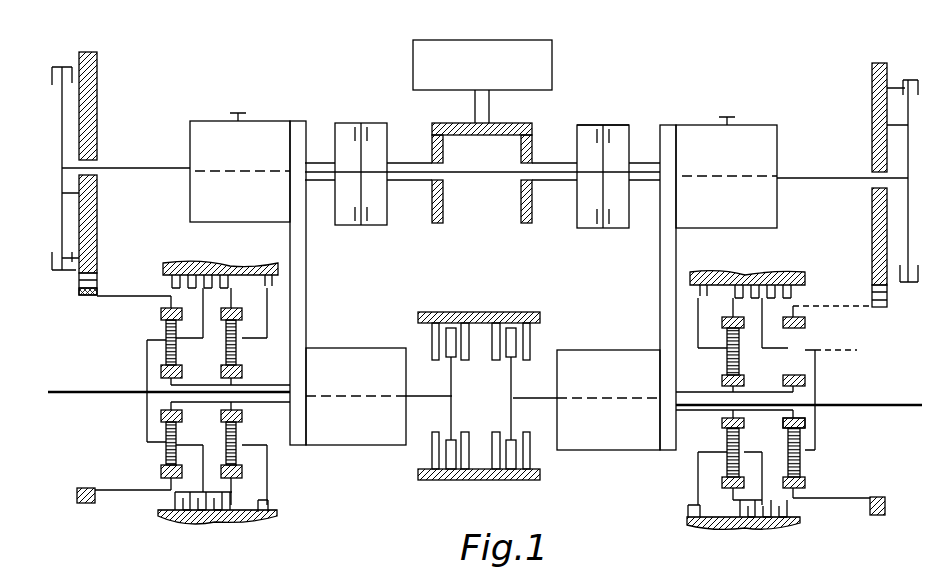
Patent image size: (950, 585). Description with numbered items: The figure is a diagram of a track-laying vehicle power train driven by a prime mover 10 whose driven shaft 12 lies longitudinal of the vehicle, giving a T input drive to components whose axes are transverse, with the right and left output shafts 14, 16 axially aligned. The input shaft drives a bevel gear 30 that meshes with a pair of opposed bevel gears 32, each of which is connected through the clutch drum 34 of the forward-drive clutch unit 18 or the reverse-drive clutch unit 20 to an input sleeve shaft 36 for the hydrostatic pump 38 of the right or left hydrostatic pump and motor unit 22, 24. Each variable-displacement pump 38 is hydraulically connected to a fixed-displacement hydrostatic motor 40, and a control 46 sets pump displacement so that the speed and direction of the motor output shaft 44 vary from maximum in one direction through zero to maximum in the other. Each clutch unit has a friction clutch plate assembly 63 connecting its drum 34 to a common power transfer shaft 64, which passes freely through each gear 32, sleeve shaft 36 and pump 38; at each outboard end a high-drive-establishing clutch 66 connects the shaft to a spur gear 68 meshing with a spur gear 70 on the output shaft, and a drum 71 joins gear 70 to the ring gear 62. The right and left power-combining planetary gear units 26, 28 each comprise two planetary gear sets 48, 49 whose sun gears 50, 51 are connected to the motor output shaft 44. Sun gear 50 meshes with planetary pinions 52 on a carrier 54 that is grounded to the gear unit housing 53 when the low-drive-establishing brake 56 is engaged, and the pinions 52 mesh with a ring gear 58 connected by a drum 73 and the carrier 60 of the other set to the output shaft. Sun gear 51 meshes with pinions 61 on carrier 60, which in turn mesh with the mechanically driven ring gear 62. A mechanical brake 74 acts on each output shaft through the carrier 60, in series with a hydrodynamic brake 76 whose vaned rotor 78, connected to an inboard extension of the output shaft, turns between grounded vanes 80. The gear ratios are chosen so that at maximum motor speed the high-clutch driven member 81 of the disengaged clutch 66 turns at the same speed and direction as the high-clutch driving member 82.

The prime mover 10 is at (553, 42).
The prime mover driven shaft 12 is at (475, 107).
The right-track-powering output shaft 14 is at (865, 404).
The left-track-powering output shaft 16 is at (90, 392).
The forward-drive clutch unit 18 is at (598, 122).
The reverse-drive clutch unit 20 is at (378, 228).
The right hydrostatic pump and motor unit 22 is at (760, 124).
The left hydrostatic pump and motor unit 24 is at (479, 151).
The right power-combining planetary gear unit 26 is at (768, 531).
The left power-combining planetary gear unit 28 is at (245, 523).
The bevel gear 30 is at (490, 179).
The opposed bevel gears 32 is at (437, 212).
The clutch drum 34 is at (483, 167).
The input sleeve shaft 36 is at (318, 182).
The hydrostatic pump 38 is at (195, 172).
The hydrostatic motor 40 is at (485, 405).
The motor output shaft 44 is at (292, 400).
The control 46 is at (240, 112).
The planetary gear set 48 is at (242, 350).
The planetary gear set 49 is at (160, 354).
The sun gear 50 is at (243, 416).
The sun gear 51 is at (160, 420).
The planetary pinions 52 is at (243, 450).
The gear unit housing 53 is at (490, 312).
The carrier 54 is at (245, 340).
The low-drive-establishing brake 56 is at (292, 282).
The ring gear 58 is at (245, 472).
The carrier 60 is at (157, 342).
The pinions 61 is at (178, 345).
The ring gear 62 is at (165, 308).
The friction clutch plate assembly 63 is at (367, 128).
The common power transfer shaft 64 is at (495, 178).
The high-drive-establishing clutch 66 is at (60, 66).
The spur gear 68 is at (92, 80).
The spur gear 70 is at (88, 504).
The drum 71 is at (114, 300).
The drum 73 is at (228, 292).
The mechanical brake 74 is at (168, 512).
The hydrodynamic brake 76 is at (430, 340).
The vaned rotor 78 is at (512, 335).
The grounded vanes 80 is at (530, 470).
The high-clutch driven member 81 is at (68, 258).
The high-clutch driving member 82 is at (64, 193).